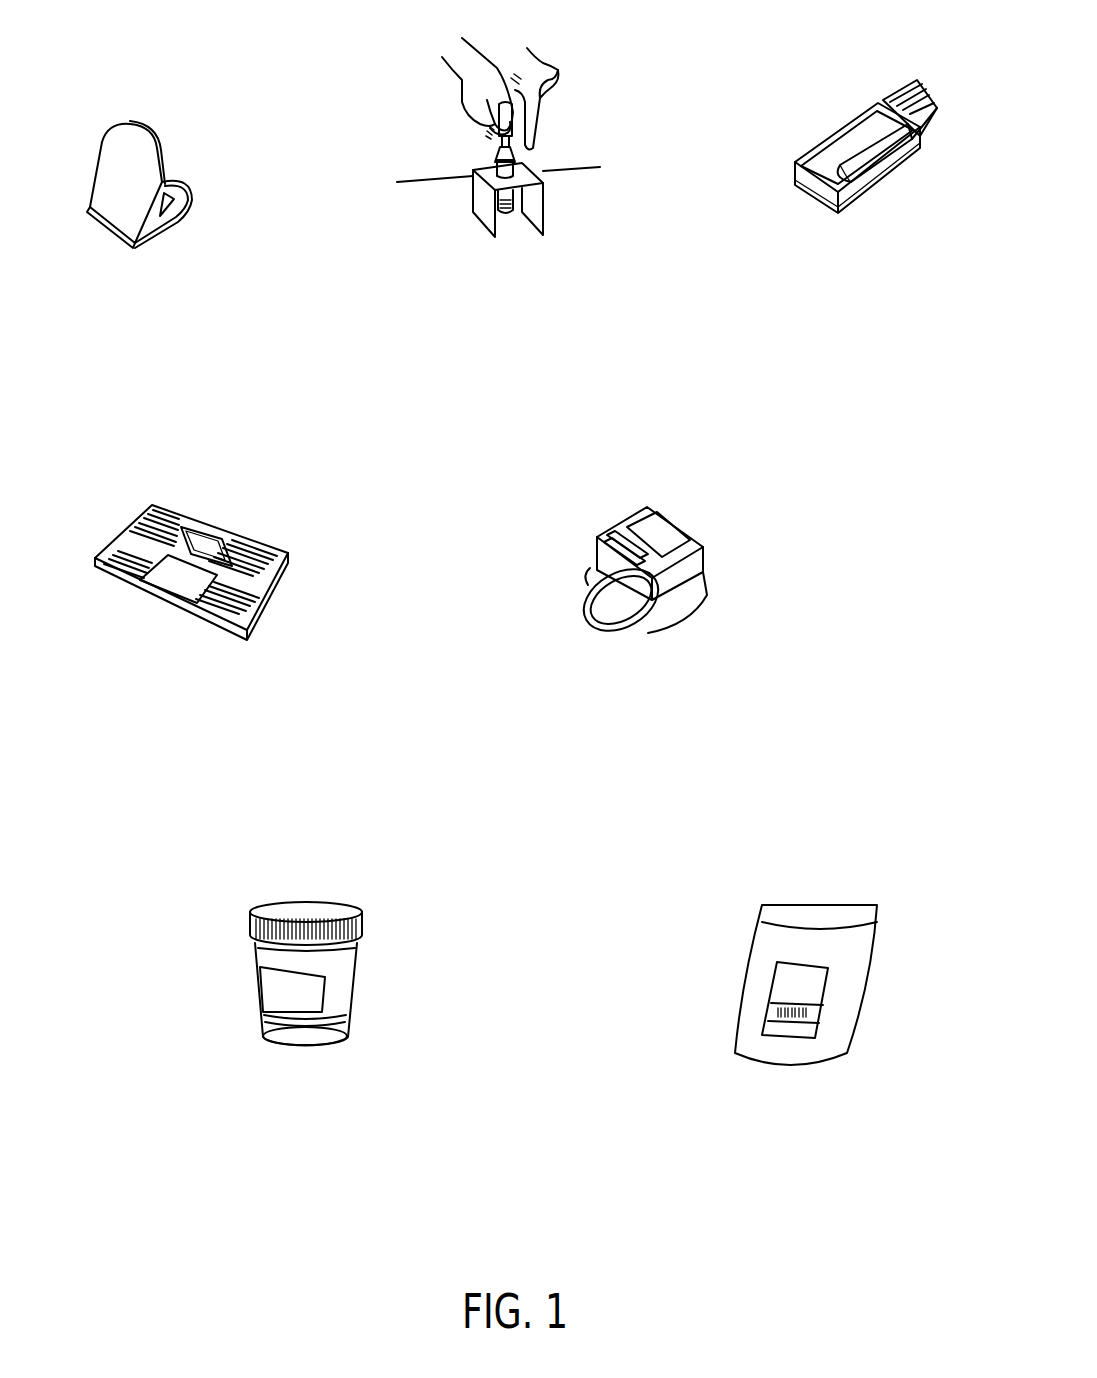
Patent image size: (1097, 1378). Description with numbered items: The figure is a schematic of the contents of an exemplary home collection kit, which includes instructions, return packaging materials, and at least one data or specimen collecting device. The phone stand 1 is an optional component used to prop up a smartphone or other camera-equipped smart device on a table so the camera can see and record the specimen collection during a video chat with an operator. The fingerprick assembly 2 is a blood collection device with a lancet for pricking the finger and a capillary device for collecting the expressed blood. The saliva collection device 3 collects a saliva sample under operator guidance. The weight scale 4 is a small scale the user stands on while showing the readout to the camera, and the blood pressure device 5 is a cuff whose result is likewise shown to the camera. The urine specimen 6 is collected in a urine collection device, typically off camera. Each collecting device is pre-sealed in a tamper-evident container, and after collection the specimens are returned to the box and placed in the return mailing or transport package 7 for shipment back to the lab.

The phone stand 1 is at (126, 208).
The fingerprick assembly 2 is at (498, 166).
The saliva collection device 3 is at (866, 187).
The weight scale 4 is at (191, 597).
The blood pressure device 5 is at (637, 598).
The urine specimen 6 is at (303, 1009).
The return mailing or transport package 7 is at (795, 1011).